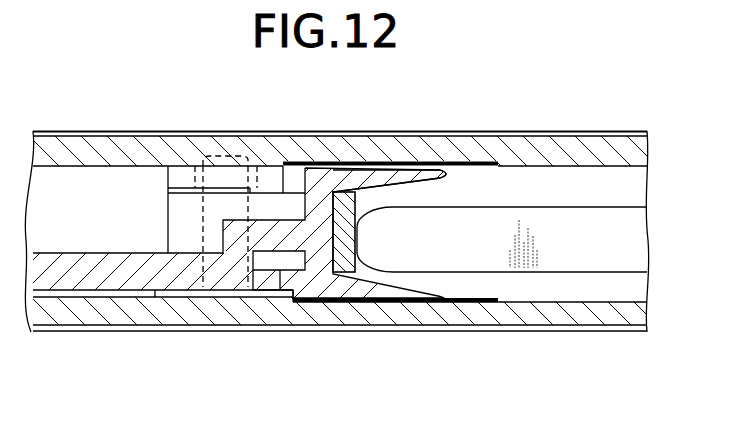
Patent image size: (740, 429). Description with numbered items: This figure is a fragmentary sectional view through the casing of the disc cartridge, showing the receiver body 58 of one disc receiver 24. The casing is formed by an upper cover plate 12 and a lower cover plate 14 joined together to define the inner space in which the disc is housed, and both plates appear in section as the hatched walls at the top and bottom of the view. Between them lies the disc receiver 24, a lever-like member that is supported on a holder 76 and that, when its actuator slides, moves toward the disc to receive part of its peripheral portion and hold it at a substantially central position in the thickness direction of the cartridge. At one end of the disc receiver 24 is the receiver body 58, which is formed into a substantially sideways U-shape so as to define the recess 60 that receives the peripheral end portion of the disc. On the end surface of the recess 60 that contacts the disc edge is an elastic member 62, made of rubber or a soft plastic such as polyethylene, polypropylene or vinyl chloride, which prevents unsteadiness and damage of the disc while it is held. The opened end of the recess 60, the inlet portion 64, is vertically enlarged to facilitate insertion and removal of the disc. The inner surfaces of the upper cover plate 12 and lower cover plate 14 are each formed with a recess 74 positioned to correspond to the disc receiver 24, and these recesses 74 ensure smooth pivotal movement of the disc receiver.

The upper cover plate 12 is at (177, 140).
The lower cover plate 14 is at (135, 323).
The disc receiver 24 is at (100, 250).
The receiver body 58 is at (328, 170).
The recess 60 is at (416, 226).
The elastic member 62 is at (343, 200).
The inlet portion 64 is at (436, 176).
The recess 74 is at (481, 162).
The holder 76 is at (182, 291).